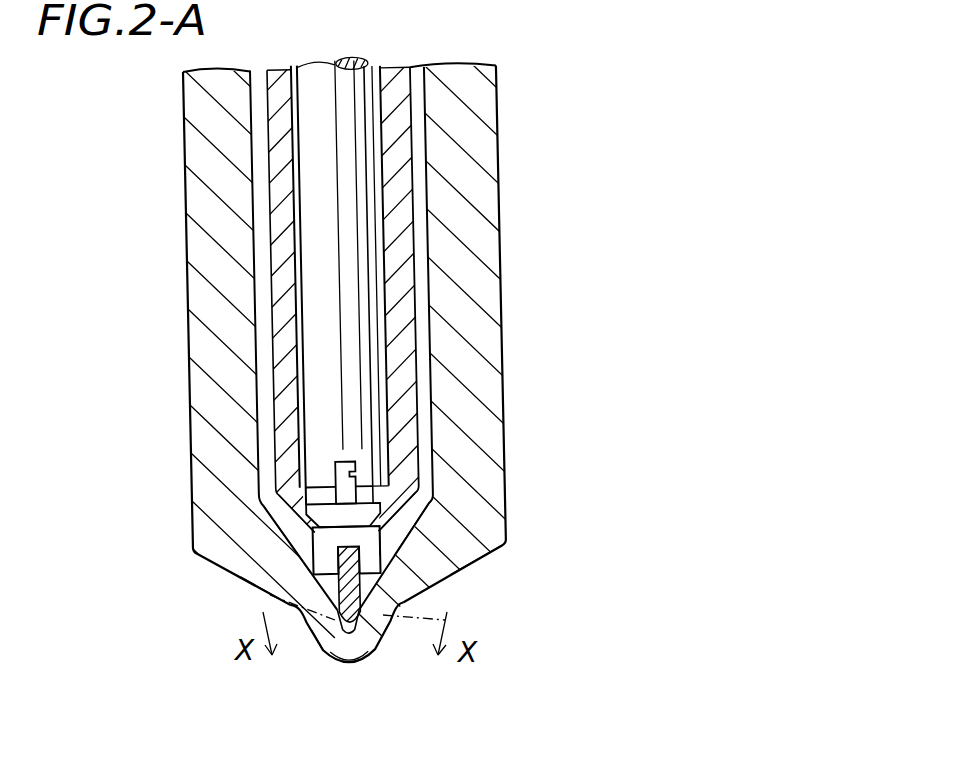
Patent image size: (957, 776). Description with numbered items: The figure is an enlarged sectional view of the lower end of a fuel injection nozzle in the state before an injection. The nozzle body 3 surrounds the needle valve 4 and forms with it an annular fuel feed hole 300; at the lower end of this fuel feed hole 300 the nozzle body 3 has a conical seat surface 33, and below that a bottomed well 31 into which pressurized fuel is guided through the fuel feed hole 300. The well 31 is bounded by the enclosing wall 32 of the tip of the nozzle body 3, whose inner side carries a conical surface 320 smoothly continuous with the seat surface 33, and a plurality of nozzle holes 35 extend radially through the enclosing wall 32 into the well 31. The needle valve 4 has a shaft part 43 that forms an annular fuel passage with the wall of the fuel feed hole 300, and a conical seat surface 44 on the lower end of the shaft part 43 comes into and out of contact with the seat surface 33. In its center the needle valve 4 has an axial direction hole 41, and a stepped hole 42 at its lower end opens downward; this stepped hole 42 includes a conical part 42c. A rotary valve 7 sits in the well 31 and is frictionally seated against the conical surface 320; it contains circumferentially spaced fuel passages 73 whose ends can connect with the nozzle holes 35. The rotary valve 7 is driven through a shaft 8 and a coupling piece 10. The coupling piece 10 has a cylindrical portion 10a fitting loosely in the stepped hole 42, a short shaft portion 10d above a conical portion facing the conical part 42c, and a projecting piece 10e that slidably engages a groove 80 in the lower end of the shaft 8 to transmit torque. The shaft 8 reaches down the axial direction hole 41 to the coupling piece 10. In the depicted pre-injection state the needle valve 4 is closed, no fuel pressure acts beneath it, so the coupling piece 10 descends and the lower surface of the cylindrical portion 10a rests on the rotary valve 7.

The nozzle body 3 is at (213, 442).
The needle valve 4 is at (403, 280).
The rotary valve 7 is at (420, 600).
The shaft 8 is at (310, 210).
The coupling piece 10 is at (290, 540).
The cylindrical portion 10a is at (440, 578).
The short shaft portion 10d is at (313, 483).
The projecting piece 10e is at (360, 490).
The well 31 is at (385, 625).
The enclosing wall 32 is at (375, 640).
The seat surface 33 is at (380, 517).
The nozzle holes 35 is at (300, 592).
The axial direction hole 41 is at (383, 203).
The stepped hole 42 is at (335, 512).
The conical part 42c is at (365, 510).
The shaft part 43 is at (273, 310).
The seat surface 44 is at (395, 560).
The fuel passages 73 is at (300, 585).
The groove 80 is at (355, 468).
The fuel feed hole 300 is at (423, 340).
The conical surface 320 is at (315, 640).